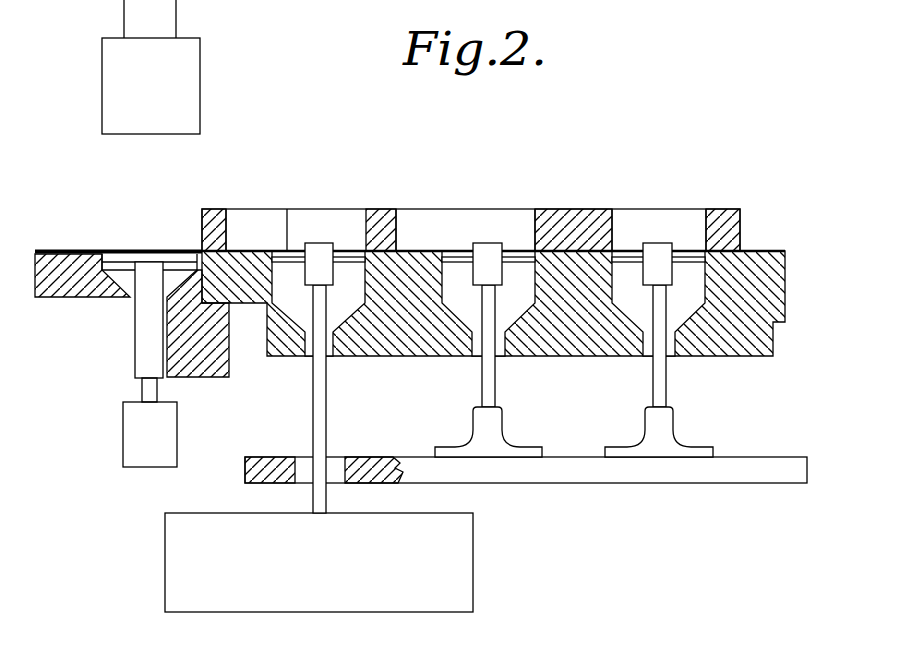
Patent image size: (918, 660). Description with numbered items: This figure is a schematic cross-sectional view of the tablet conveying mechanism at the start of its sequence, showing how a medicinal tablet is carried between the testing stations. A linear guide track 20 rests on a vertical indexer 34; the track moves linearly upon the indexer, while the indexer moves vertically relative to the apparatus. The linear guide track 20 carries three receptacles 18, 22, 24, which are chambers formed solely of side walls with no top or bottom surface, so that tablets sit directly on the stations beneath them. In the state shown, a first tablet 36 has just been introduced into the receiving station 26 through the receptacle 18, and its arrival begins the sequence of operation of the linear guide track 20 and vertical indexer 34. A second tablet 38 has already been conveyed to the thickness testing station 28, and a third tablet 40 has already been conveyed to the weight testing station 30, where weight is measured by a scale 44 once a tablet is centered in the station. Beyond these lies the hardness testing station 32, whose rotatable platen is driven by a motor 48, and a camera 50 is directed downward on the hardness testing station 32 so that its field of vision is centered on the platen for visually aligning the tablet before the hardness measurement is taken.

The receptacle 18 is at (623, 223).
The linear guide track 20 is at (737, 232).
The receptacle 22 is at (426, 222).
The receptacle 24 is at (248, 218).
The receiving station 26 is at (632, 250).
The thickness testing station 28 is at (460, 250).
The weight testing station 30 is at (288, 250).
The hardness testing station 32 is at (148, 262).
The vertical indexer 34 is at (780, 302).
The first tablet 36 is at (667, 243).
The second tablet 38 is at (500, 244).
The third tablet 40 is at (325, 244).
The scale 44 is at (305, 582).
The motor 48 is at (140, 435).
The camera 50 is at (195, 78).